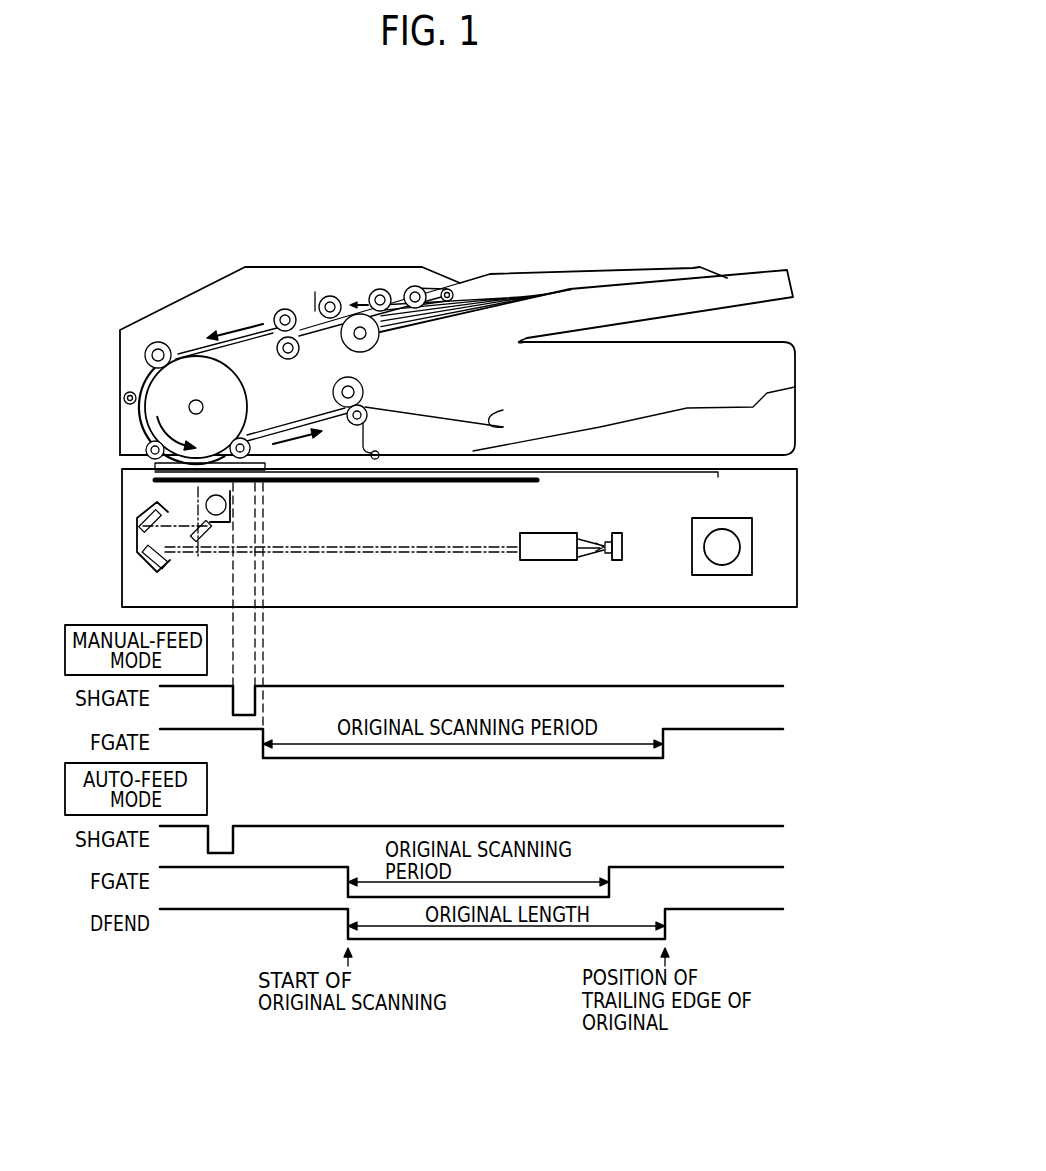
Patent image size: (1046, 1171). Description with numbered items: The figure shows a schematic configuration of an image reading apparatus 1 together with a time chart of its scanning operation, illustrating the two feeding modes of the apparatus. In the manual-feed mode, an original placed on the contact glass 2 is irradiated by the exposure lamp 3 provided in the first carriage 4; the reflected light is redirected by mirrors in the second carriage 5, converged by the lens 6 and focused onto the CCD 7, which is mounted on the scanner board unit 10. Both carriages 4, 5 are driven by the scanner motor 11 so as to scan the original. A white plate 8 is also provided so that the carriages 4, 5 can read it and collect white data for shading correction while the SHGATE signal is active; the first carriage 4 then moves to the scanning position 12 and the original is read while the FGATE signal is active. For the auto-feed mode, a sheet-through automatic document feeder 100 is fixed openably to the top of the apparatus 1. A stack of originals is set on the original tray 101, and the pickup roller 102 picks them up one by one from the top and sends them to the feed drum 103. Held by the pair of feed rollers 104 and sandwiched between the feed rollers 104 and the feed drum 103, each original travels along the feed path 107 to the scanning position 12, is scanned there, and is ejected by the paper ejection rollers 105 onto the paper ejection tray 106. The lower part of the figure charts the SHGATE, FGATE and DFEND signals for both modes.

The image reading apparatus 1 is at (740, 186).
The contact glass 2 is at (537, 481).
The exposure lamp 3 is at (221, 509).
The first carriage 4 is at (213, 524).
The second carriage 5 is at (157, 567).
The lens 6 is at (548, 561).
The CCD 7 is at (608, 560).
The white plate 8 is at (235, 472).
The scanner board unit 10 is at (624, 548).
The scanner motor 11 is at (752, 538).
The scanning position 12 is at (196, 476).
The automatic document feeder 100 is at (498, 259).
The original tray 101 is at (625, 290).
The pickup roller 102 is at (415, 287).
The feed drum 103 is at (183, 372).
The feed rollers 104 is at (283, 309).
The paper ejection rollers 105 is at (357, 388).
The paper ejection tray 106 is at (579, 398).
The feed path 107 is at (251, 344).